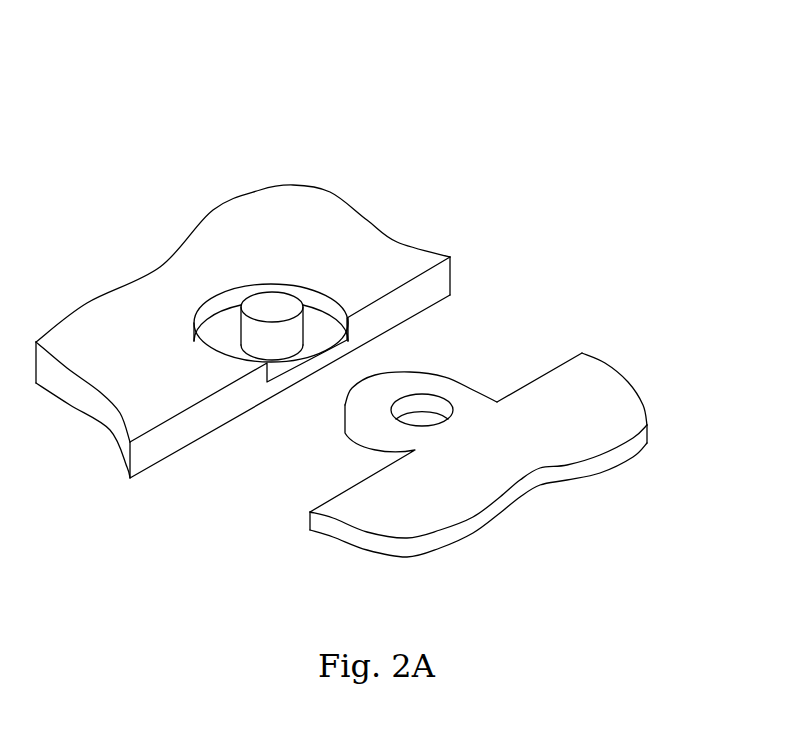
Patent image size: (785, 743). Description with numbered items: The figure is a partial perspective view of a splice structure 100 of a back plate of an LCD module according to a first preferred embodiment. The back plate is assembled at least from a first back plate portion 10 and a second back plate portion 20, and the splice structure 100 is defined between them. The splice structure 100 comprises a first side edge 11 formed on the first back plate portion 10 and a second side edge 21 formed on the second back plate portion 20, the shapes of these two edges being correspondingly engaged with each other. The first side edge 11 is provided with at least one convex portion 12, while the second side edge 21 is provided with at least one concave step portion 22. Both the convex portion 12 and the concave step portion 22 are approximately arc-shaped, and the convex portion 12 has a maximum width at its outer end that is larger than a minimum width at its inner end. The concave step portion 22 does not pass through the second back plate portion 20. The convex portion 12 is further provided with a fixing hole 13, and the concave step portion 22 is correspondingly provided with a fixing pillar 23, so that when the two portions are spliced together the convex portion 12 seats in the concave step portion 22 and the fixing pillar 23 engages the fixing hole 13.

The splice structure 100 is at (678, 44).
The first back plate portion 10 is at (647, 363).
The first side edge 11 is at (333, 497).
The convex portion 12 is at (458, 393).
The fixing hole 13 is at (420, 402).
The second back plate portion 20 is at (352, 176).
The second side edge 21 is at (197, 422).
The concave step portion 22 is at (220, 327).
The fixing pillar 23 is at (272, 305).